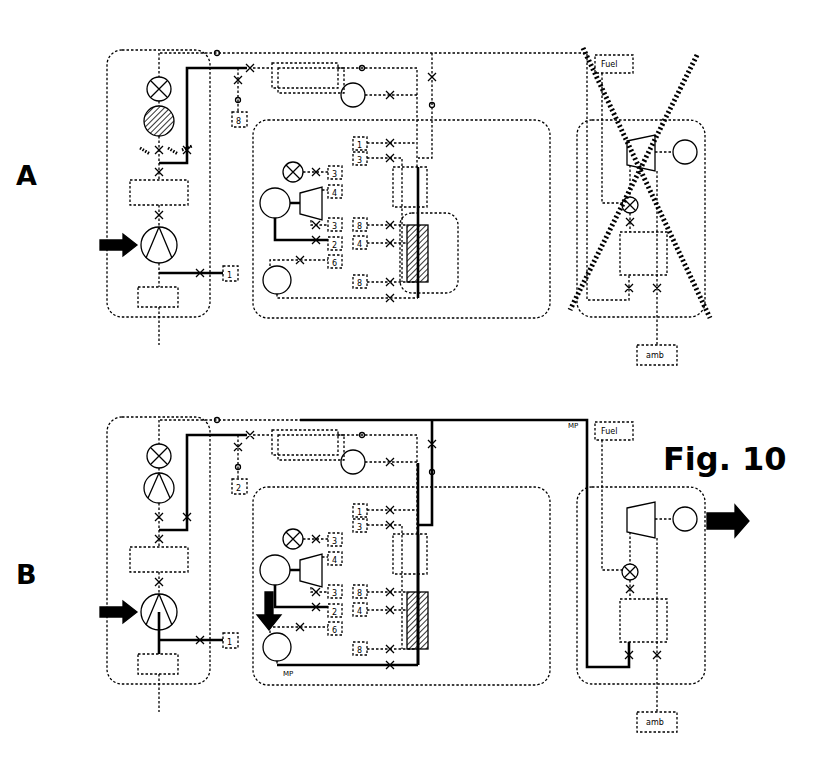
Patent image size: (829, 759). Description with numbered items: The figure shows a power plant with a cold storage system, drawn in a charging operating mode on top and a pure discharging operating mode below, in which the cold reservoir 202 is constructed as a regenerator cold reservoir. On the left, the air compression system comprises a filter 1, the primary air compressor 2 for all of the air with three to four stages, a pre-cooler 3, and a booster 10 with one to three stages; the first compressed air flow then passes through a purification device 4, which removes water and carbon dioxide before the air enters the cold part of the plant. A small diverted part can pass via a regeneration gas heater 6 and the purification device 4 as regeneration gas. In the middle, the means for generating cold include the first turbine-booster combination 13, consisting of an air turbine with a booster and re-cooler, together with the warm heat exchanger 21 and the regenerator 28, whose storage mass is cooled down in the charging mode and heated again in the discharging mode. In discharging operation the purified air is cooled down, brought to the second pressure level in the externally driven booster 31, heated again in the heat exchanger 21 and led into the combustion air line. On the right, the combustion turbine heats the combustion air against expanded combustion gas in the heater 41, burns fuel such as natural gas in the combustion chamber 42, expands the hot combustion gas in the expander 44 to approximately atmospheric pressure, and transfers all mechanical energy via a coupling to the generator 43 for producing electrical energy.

The filter 1 is at (169, 480).
The primary air compressor 2 is at (170, 428).
The pre-cooler 3 is at (166, 376).
The purification device 4 is at (308, 267).
The regeneration gas heater 6 is at (347, 282).
The booster 10 is at (151, 290).
The first turbine-booster combination 13 is at (294, 374).
The warm heat exchanger 21 is at (420, 370).
The regenerator 28 is at (427, 437).
The externally driven booster 31 is at (288, 463).
The heater 41 is at (643, 437).
The combustion chamber 42 is at (636, 380).
The generator 43 is at (685, 346).
The expander 44 is at (641, 336).
The cold reservoir 202 is at (458, 258).